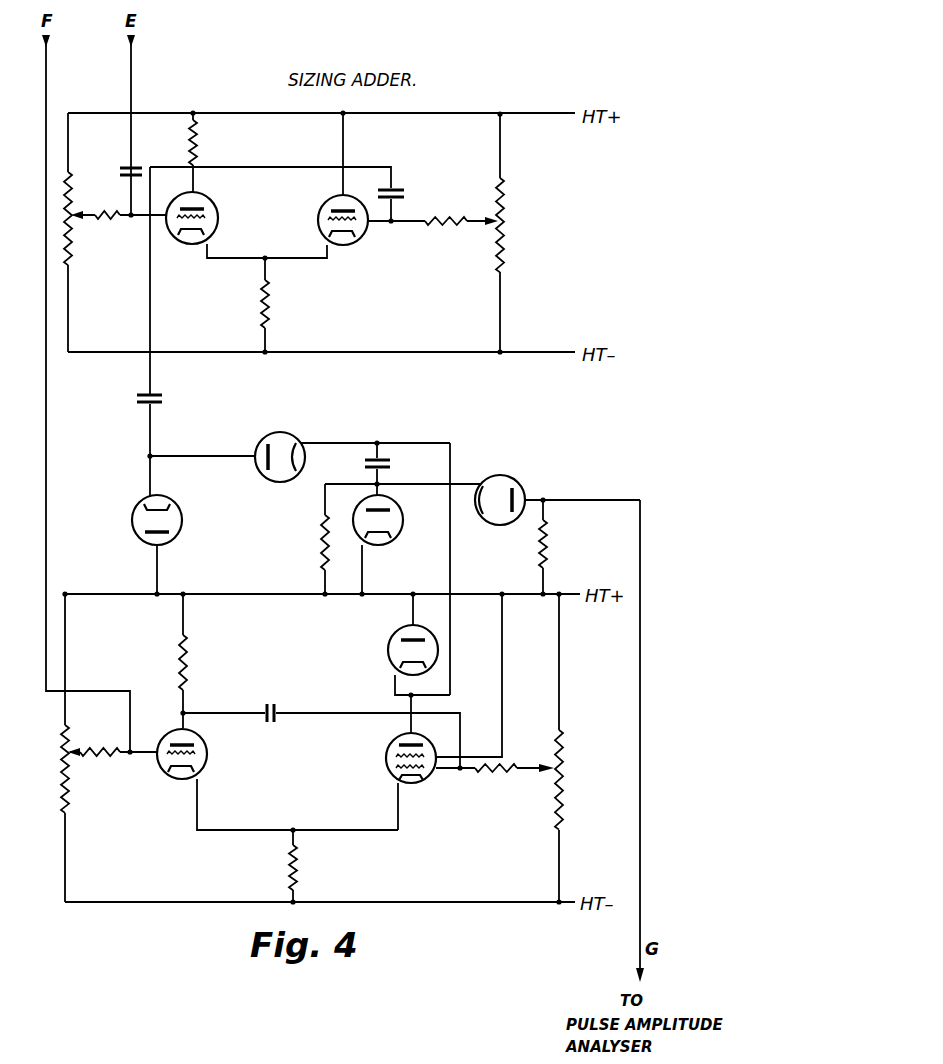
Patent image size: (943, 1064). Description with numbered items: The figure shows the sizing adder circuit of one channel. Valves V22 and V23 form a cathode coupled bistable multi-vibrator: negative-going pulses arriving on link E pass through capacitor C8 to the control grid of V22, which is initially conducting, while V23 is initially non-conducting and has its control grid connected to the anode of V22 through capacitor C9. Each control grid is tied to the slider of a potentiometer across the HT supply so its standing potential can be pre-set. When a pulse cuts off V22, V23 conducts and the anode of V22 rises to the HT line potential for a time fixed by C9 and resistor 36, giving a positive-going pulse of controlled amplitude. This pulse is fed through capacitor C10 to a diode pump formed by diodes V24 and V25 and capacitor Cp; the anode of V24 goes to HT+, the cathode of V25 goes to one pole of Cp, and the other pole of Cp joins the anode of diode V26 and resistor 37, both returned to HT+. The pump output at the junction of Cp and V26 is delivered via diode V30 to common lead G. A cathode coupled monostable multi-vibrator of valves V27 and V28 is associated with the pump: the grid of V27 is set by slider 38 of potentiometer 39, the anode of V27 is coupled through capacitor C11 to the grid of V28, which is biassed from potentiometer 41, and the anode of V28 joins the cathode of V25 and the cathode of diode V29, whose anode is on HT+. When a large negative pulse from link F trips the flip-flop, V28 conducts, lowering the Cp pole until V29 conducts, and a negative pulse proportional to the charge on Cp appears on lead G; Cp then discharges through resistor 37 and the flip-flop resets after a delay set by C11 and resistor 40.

The capacitor C8 is at (116, 174).
The capacitor C9 is at (402, 200).
The capacitor C10 is at (150, 408).
The capacitor C11 is at (321, 730).
The capacitor Cp is at (389, 469).
The valve V22 is at (218, 217).
The valve V23 is at (314, 220).
The diode V24 is at (183, 520).
The diode V25 is at (298, 440).
The diode V26 is at (404, 520).
The valve V27 is at (277, 779).
The valve V28 is at (386, 769).
The diode V29 is at (388, 660).
The diode V30 is at (512, 480).
The resistor 36 is at (470, 220).
The resistor 37 is at (322, 547).
The slider 38 is at (102, 762).
The potentiometer 39 is at (72, 752).
The resistor 40 is at (510, 774).
The potentiometer 41 is at (553, 747).